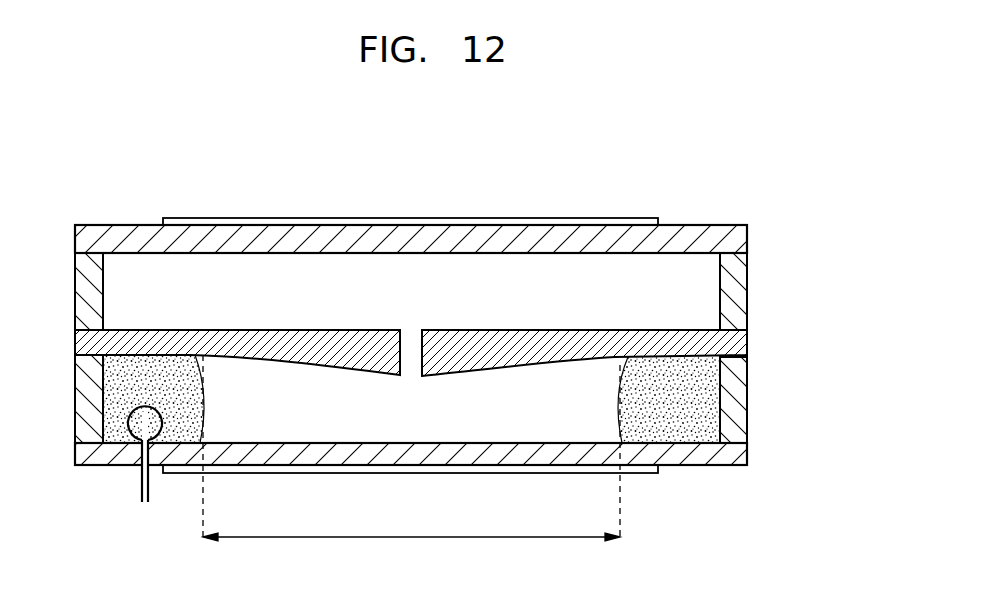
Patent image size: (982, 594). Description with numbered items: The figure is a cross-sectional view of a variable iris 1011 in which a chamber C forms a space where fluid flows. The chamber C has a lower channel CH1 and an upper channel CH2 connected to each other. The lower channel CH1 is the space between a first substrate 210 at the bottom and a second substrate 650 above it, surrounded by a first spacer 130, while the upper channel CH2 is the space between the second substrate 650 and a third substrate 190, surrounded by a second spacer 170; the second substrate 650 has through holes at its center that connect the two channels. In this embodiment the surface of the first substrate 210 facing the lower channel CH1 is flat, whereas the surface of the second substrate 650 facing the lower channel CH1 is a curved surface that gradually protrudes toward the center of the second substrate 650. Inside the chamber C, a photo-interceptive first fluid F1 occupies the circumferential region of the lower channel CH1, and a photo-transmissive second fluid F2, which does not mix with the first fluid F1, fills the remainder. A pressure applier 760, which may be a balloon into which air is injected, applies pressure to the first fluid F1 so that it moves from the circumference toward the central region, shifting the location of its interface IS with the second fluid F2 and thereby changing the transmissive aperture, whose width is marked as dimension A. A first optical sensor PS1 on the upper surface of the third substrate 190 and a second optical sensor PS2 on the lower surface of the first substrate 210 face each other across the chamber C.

The variable iris 1011 is at (714, 177).
The third substrate 190 is at (738, 236).
The second spacer 170 is at (738, 292).
The second substrate 650 is at (738, 350).
The first spacer 130 is at (738, 407).
The first substrate 210 is at (738, 454).
The pressure applier 760 is at (147, 485).
The first optical sensor PS1 is at (214, 218).
The second optical sensor PS2 is at (638, 473).
The lower channel CH1 is at (456, 400).
The upper channel CH2 is at (478, 285).
The chamber C is at (493, 164).
The interface IS is at (620, 367).
The first fluid F1 is at (411, 399).
The second fluid F2 is at (562, 400).
The region A is at (411, 463).